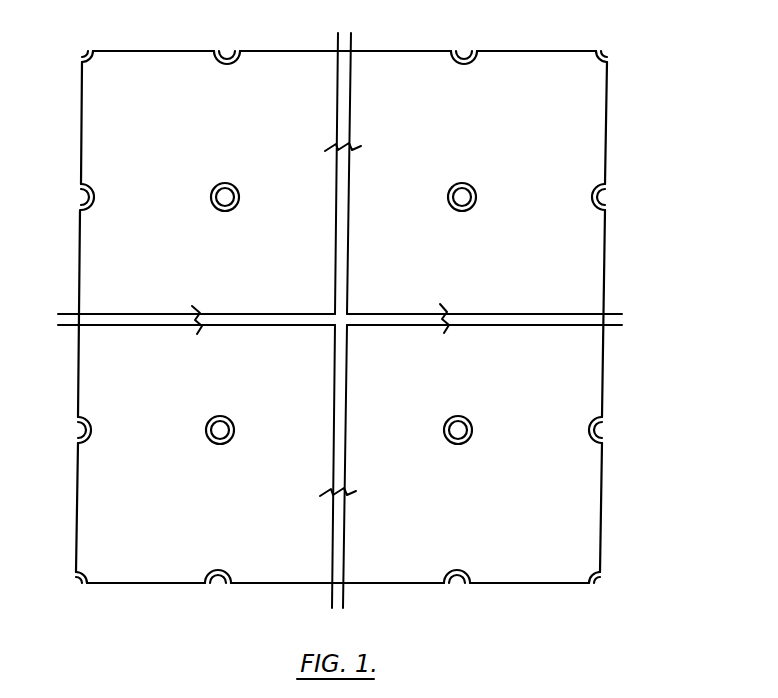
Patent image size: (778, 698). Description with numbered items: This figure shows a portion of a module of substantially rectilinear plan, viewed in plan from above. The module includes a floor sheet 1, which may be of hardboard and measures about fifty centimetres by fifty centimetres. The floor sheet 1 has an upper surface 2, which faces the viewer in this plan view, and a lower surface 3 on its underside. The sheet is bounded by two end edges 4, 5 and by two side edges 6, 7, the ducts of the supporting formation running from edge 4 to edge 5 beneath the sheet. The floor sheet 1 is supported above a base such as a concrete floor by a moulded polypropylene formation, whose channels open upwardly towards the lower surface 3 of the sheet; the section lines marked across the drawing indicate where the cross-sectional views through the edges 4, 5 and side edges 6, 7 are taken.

The floor sheet 1 is at (168, 567).
The upper surface 2 is at (630, 568).
The lower surface 3 is at (596, 28).
The edge 4 is at (50, 148).
The edge 5 is at (50, 222).
The side edge 6 is at (436, 28).
The side edge 7 is at (266, 28).